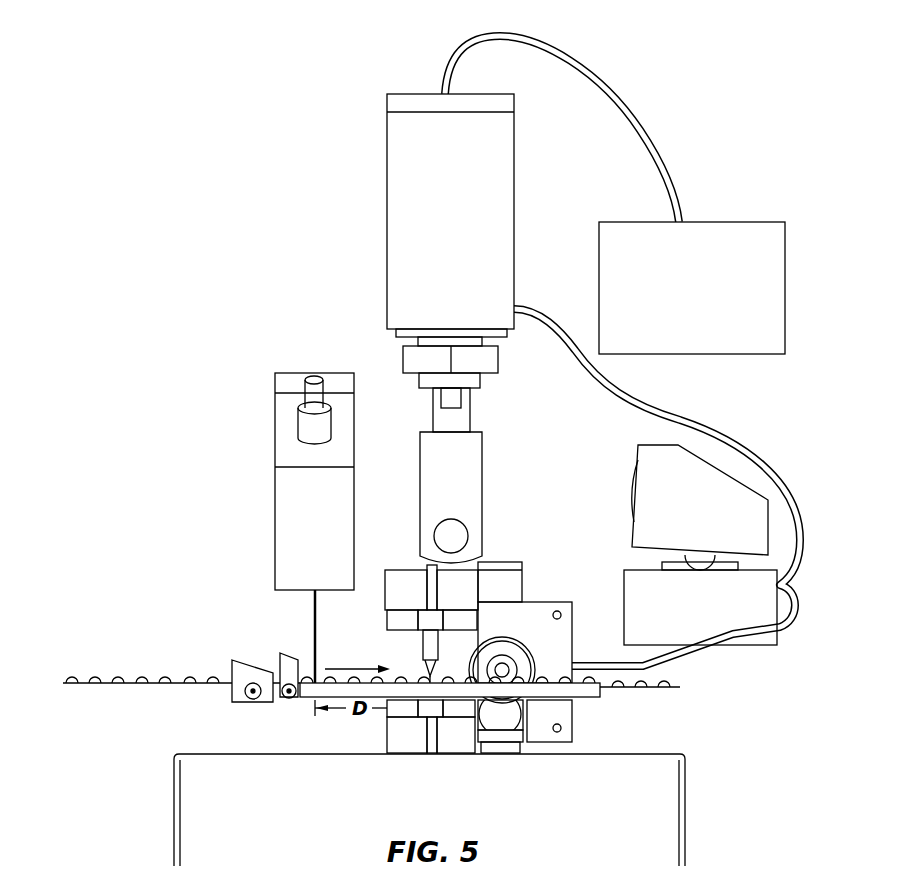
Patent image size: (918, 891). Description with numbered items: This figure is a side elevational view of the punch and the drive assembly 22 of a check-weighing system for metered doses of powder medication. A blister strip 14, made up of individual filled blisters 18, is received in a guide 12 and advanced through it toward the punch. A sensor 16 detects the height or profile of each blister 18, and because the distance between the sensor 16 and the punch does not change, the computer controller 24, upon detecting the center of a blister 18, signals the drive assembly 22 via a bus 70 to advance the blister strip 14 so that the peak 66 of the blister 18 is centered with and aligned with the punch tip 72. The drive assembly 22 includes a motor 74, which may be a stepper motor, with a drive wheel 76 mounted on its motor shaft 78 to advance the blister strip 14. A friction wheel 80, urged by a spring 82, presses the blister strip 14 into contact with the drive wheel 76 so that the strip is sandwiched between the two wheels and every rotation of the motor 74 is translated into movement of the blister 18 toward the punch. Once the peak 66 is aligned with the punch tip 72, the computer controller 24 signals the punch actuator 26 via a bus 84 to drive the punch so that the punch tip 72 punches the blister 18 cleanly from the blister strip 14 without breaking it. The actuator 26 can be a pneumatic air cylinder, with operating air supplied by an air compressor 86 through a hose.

The guide 12 is at (305, 698).
The blister strip 14 is at (127, 686).
The sensor 16 is at (292, 486).
The blister 18 is at (216, 679).
The drive assembly 22 is at (405, 546).
The computer controller 24 is at (660, 606).
The punch actuator 26 is at (400, 228).
The peak 66 is at (432, 681).
The bus 70 is at (688, 663).
The punch tip 72 is at (422, 668).
The motor 74 is at (509, 626).
The drive wheel 76 is at (525, 642).
The motor shaft 78 is at (510, 667).
The friction wheel 80 is at (530, 706).
The spring 82 is at (508, 753).
The bus 84 is at (612, 393).
The air compressor 86 is at (665, 315).